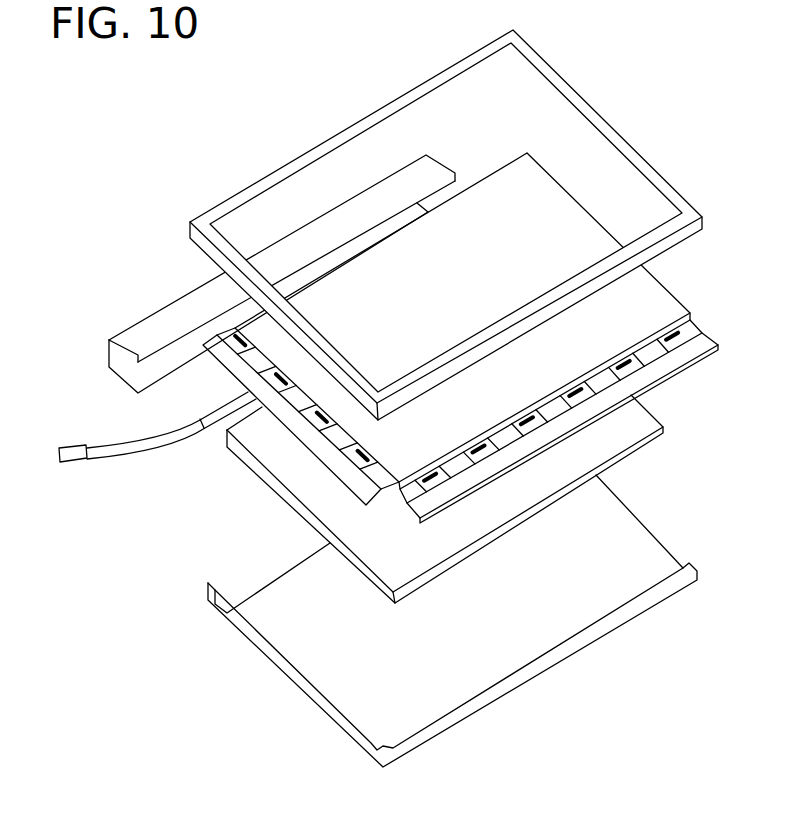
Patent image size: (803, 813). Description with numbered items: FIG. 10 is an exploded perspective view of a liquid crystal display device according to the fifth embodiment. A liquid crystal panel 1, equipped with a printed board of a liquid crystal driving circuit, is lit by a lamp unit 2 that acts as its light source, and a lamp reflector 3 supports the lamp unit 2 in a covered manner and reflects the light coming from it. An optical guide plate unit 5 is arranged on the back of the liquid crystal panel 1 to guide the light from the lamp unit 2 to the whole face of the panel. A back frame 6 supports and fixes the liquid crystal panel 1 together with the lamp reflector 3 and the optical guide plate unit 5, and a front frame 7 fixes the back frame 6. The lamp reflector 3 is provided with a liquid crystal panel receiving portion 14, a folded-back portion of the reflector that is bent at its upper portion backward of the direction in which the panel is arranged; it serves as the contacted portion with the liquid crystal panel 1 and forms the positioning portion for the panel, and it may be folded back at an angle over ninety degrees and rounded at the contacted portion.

The liquid crystal panel 1 is at (668, 303).
The lamp unit 2 is at (202, 425).
The lamp reflector 3 is at (130, 337).
The optical guide plate unit 5 is at (647, 418).
The back frame 6 is at (653, 558).
The front frame 7 is at (593, 100).
The liquid crystal panel receiving portion 14 is at (181, 335).